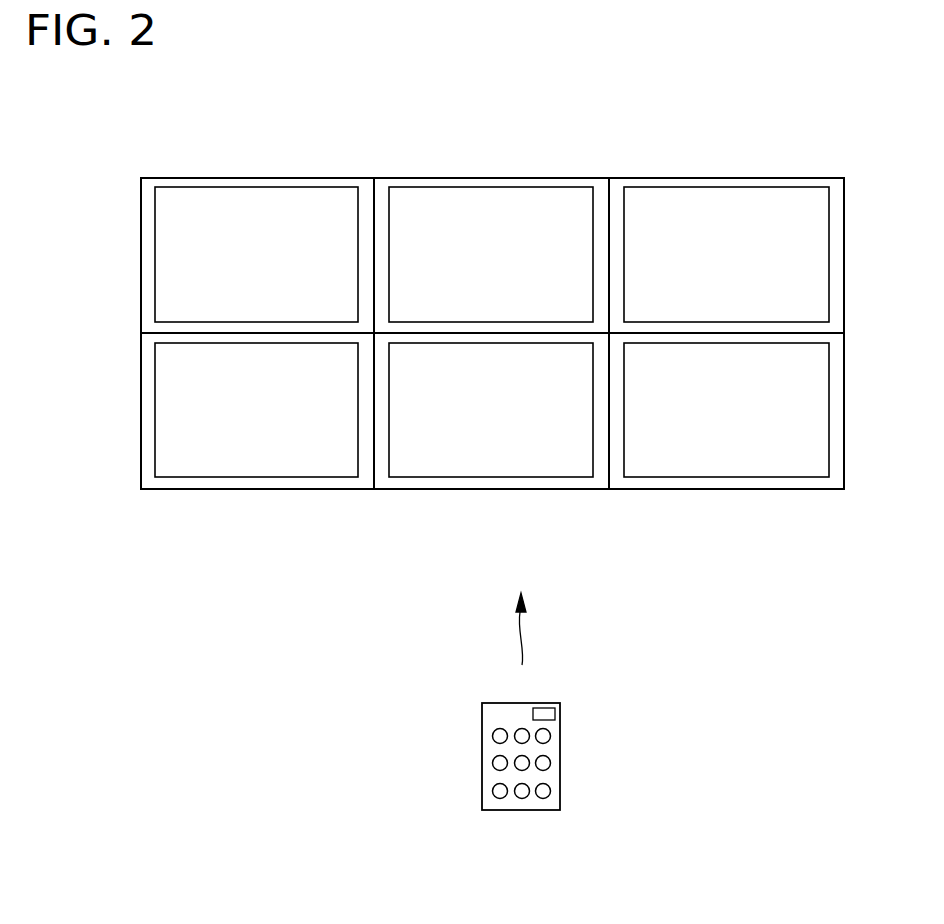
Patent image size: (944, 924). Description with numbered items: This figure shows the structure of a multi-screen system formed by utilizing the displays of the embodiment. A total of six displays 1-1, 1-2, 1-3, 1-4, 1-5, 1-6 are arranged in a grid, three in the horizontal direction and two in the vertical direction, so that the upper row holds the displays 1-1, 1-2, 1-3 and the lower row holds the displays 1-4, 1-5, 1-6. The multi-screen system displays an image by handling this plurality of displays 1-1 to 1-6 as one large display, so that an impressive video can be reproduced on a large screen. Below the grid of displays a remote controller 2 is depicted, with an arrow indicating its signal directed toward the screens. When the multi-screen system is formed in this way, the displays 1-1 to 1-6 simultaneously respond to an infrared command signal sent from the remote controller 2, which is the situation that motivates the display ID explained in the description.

The display 1-1 is at (262, 203).
The display 1-2 is at (494, 203).
The display 1-3 is at (729, 203).
The display 1-4 is at (263, 461).
The display 1-5 is at (497, 460).
The display 1-6 is at (730, 460).
The remote controller 2 is at (560, 759).